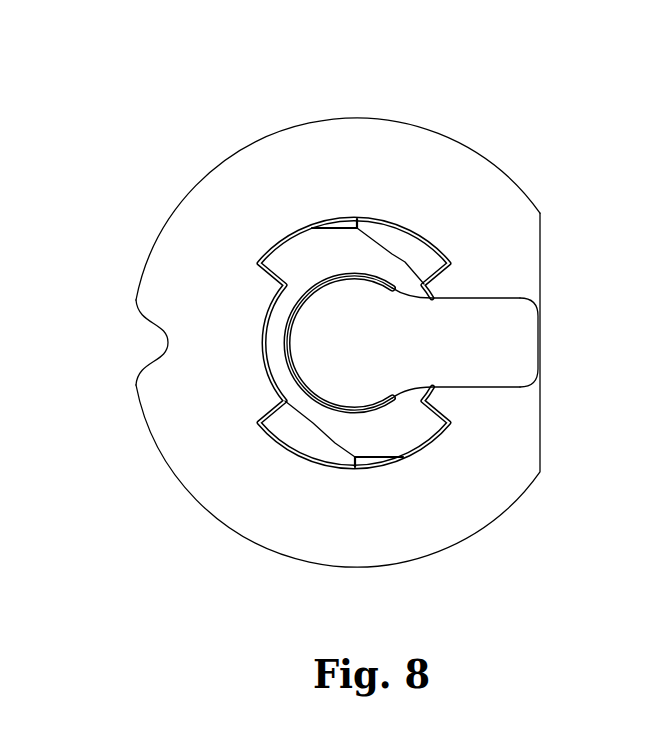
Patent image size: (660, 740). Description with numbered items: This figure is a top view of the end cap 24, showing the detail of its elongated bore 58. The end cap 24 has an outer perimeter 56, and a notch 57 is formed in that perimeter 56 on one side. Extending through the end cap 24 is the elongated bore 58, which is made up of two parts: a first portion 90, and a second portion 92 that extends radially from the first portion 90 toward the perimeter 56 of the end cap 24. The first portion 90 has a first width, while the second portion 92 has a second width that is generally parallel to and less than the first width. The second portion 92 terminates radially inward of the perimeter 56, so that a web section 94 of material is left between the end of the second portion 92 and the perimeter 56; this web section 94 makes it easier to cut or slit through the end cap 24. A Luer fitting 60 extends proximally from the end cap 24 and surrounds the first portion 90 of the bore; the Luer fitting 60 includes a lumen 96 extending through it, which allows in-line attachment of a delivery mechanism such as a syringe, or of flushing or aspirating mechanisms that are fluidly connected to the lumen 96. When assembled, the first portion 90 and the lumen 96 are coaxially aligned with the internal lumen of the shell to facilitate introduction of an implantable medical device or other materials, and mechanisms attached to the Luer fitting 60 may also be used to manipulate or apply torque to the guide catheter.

The end cap 24 is at (320, 334).
The perimeter 56 is at (204, 539).
The notch 57 is at (157, 342).
The elongated bore 58 is at (466, 273).
The Luer fitting 60 is at (316, 382).
The first portion 90 is at (373, 375).
The second portion 92 is at (500, 363).
The web section 94 is at (547, 338).
The lumen 96 is at (341, 304).